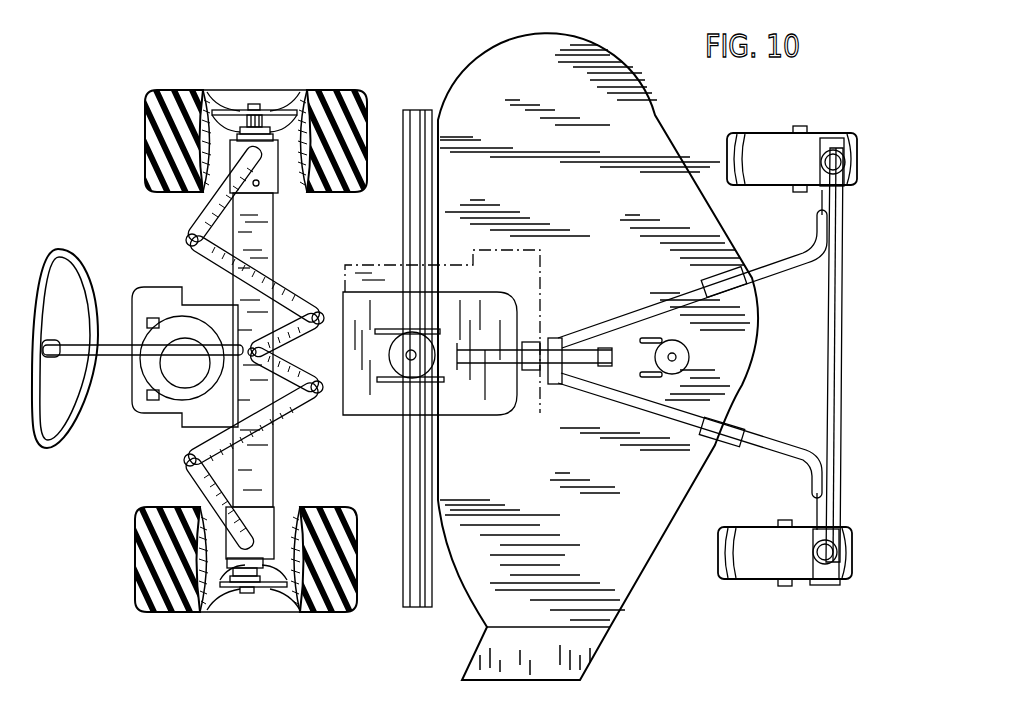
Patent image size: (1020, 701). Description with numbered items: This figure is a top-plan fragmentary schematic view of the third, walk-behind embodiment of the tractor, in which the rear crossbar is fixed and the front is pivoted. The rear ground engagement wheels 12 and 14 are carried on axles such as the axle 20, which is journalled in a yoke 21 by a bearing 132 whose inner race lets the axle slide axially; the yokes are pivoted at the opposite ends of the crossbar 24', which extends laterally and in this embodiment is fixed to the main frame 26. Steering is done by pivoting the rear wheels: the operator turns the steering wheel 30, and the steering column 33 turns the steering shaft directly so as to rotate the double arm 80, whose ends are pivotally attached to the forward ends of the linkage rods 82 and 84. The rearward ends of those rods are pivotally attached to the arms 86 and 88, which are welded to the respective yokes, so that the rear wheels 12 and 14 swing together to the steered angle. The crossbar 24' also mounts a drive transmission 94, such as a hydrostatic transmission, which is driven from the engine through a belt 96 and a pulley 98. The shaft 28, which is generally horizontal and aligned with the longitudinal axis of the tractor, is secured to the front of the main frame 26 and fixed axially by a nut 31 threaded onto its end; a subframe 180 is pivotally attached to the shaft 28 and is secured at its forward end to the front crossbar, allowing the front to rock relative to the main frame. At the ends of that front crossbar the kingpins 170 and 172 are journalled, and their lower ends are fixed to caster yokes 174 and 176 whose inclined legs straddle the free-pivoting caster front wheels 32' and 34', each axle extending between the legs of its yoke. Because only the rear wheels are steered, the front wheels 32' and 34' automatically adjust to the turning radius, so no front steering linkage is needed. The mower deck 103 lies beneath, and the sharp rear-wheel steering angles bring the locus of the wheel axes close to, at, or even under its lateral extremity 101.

The rear ground engagement wheel 12 is at (209, 108).
The axle 20 is at (294, 112).
The rear ground engagement wheel 14 is at (273, 592).
The bearing 132 is at (225, 112).
The yoke 21 is at (278, 170).
The crossbar 24' is at (270, 376).
The main frame 26 is at (330, 288).
The arm 86 is at (196, 214).
The linkage rod 82 is at (221, 259).
The linkage rod 84 is at (296, 412).
The arm 88 is at (200, 492).
The double arm 80 is at (334, 412).
The steering wheel 30 is at (77, 432).
The steering column 33 is at (120, 362).
The drive transmission 94 is at (160, 310).
The belt 96 is at (177, 388).
The pulley 98 is at (383, 382).
The shaft 28 is at (500, 400).
The nut 31 is at (608, 378).
The mower deck 103 is at (673, 140).
The lateral extremity 101 is at (556, 31).
The subframe 180 is at (636, 310).
The kingpin 170 is at (848, 153).
The front wheel 32' is at (792, 140).
The front wheel 34' is at (761, 567).
The caster yoke 174 is at (833, 141).
The kingpin 172 is at (837, 537).
The caster yoke 176 is at (823, 583).